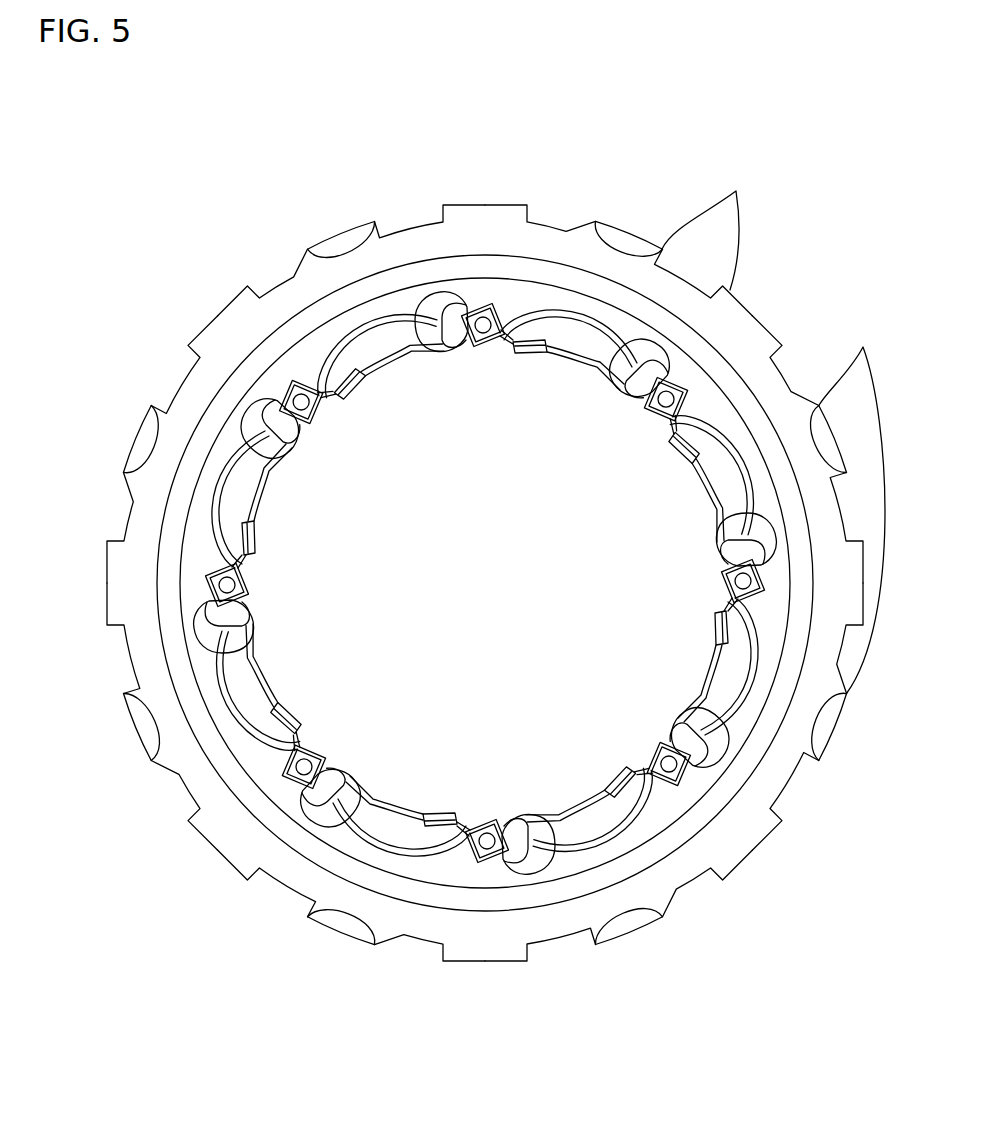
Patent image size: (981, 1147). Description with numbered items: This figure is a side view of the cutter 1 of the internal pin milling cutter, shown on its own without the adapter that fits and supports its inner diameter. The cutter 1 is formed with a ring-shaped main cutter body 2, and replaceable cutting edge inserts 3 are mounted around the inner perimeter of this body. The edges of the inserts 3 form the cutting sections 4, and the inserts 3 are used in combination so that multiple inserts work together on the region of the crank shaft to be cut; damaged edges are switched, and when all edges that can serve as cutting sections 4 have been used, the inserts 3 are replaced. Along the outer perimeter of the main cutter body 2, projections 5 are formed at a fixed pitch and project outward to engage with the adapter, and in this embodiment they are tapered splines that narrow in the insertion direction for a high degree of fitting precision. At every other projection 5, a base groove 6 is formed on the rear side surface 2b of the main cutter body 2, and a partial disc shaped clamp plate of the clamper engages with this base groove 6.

The cutter 1 is at (629, 207).
The main cutter body 2 is at (480, 197).
The side surface 2b is at (598, 211).
The replaceable cutting edge inserts 3 is at (424, 372).
The cutting sections 4 is at (607, 373).
The projections 5 is at (706, 226).
The base groove 6 is at (852, 504).